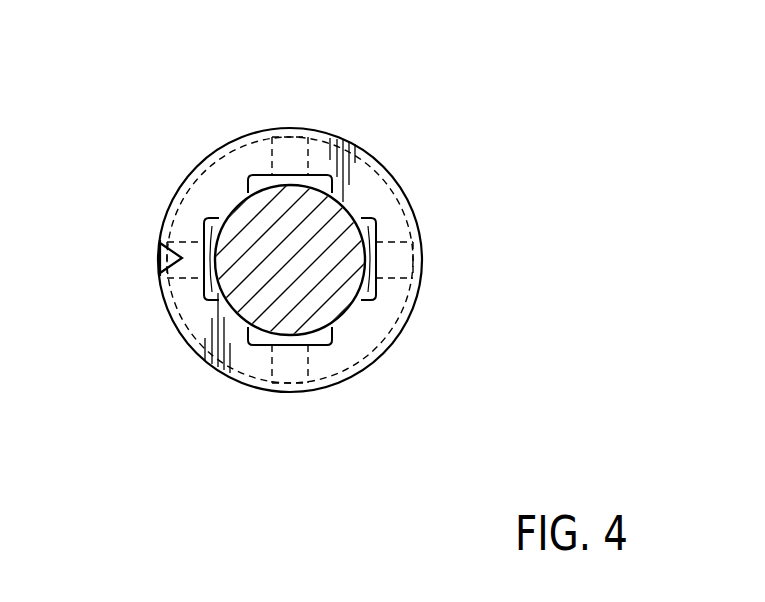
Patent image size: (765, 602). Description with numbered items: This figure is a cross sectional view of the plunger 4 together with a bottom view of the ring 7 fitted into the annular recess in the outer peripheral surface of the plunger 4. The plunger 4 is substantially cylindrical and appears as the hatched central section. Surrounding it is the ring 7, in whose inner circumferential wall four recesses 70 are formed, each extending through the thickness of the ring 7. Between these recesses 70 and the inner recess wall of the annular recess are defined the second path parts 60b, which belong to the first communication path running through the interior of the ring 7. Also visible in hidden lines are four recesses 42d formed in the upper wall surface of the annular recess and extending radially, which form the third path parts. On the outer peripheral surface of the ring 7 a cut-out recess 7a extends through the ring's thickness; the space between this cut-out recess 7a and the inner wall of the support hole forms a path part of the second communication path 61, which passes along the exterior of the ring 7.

The plunger 4 is at (352, 170).
The ring 7 is at (413, 205).
The cut-out recess 7a is at (160, 252).
The recesses 42d is at (291, 130).
The second communication path 61 is at (159, 268).
The recesses 70 is at (364, 236).
The second path parts 60b is at (213, 220).